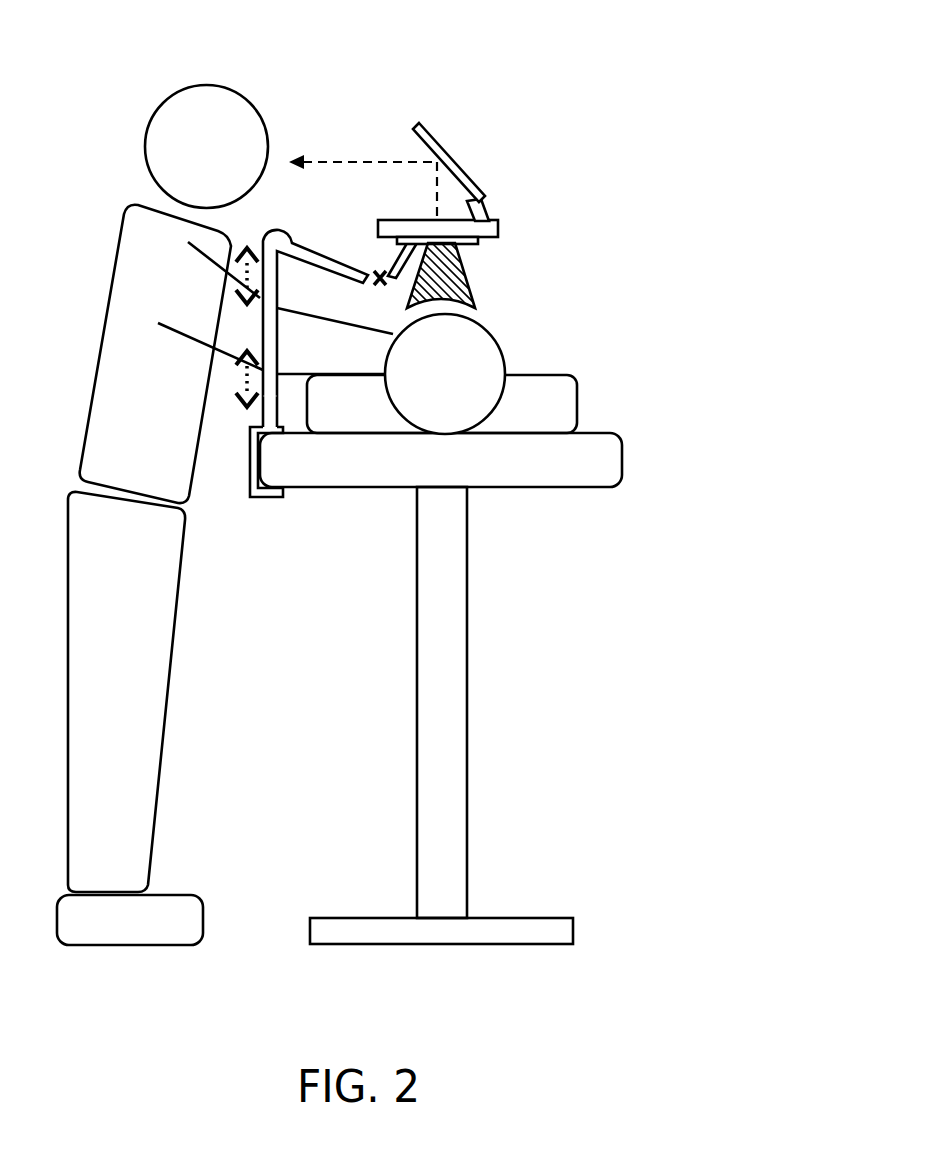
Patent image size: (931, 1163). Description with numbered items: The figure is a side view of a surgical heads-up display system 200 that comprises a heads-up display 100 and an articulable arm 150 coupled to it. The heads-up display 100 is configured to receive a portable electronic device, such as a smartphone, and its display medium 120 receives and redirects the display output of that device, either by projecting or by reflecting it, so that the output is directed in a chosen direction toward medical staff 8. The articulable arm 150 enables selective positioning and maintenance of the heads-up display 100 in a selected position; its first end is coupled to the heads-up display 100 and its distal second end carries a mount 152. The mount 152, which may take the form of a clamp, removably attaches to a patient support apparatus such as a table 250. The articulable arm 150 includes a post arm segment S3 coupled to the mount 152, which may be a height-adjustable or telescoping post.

The surgical heads-up display system 200 is at (634, 51).
The heads-up display 100 is at (473, 215).
The display medium 120 is at (450, 161).
The articulable arm 150 is at (254, 325).
The mount 152 is at (267, 503).
The post arm segment S3 is at (278, 401).
The table 250 is at (550, 488).
The medical staff 8 is at (92, 392).